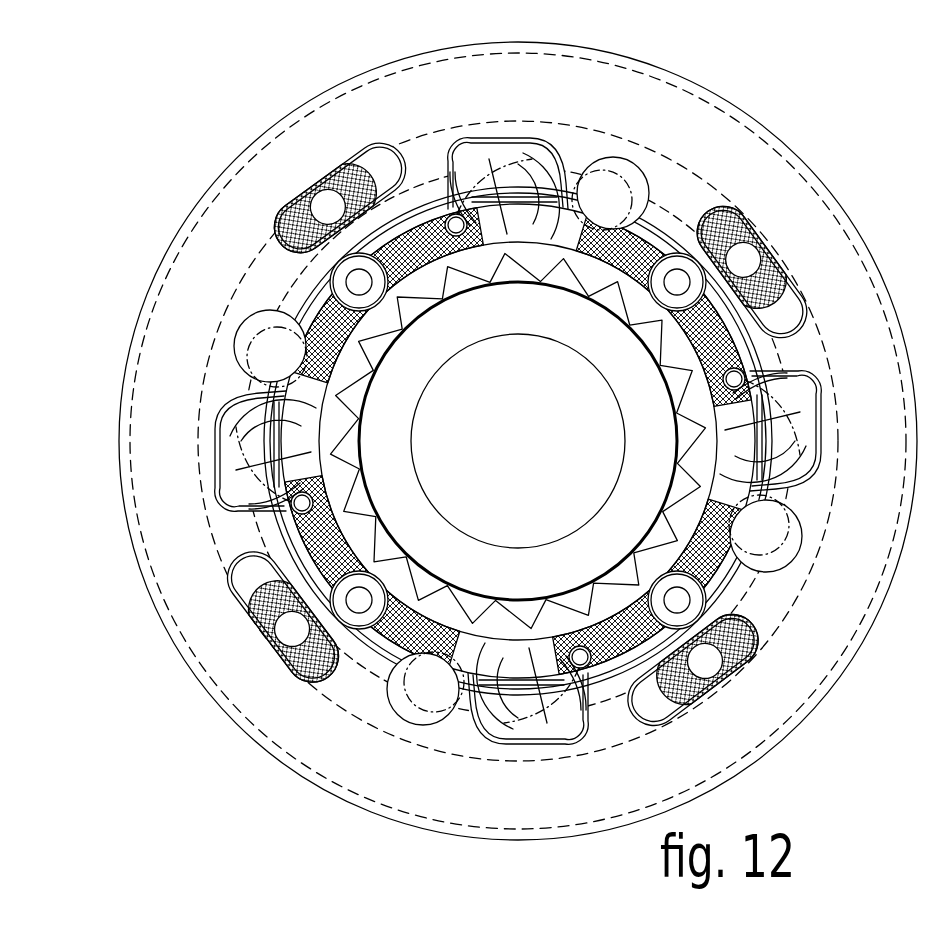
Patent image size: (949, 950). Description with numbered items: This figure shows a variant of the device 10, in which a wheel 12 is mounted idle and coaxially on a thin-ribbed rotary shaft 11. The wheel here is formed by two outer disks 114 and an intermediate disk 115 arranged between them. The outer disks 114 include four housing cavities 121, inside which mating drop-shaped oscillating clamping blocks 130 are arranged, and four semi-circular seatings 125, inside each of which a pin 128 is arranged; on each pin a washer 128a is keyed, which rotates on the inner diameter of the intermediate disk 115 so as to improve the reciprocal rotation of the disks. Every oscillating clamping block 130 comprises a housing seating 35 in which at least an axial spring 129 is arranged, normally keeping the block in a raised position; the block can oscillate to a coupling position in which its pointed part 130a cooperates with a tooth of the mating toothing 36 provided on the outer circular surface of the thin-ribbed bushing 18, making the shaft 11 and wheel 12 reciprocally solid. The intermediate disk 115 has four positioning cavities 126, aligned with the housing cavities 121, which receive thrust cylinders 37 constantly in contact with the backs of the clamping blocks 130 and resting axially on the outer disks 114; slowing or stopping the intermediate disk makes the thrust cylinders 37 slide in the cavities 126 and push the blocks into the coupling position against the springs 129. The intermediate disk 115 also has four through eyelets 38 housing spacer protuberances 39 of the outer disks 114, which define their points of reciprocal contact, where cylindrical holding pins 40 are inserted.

The device 10 is at (158, 128).
The rotary shaft 11 is at (680, 275).
The wheel 12 is at (262, 750).
The thin-ribbed bushing 18 is at (392, 422).
The housing seating 35 is at (508, 200).
The mating toothing 36 is at (423, 288).
The thrust cylinder 37 is at (612, 178).
The through eyelet 38 is at (800, 322).
The spacer protuberance 39 is at (722, 215).
The cylindrical holding pin 40 is at (752, 250).
The outer disk 114 is at (375, 170).
The intermediate disk 115 is at (715, 122).
The housing cavity 121 is at (527, 157).
The semi-circular seating 125 is at (672, 283).
The positioning cavity 126 is at (600, 160).
The pin 128 is at (745, 262).
The washer 128a is at (460, 347).
The axial spring 129 is at (485, 288).
The oscillating clamping block 130 is at (478, 158).
The pointed part 130a is at (425, 383).